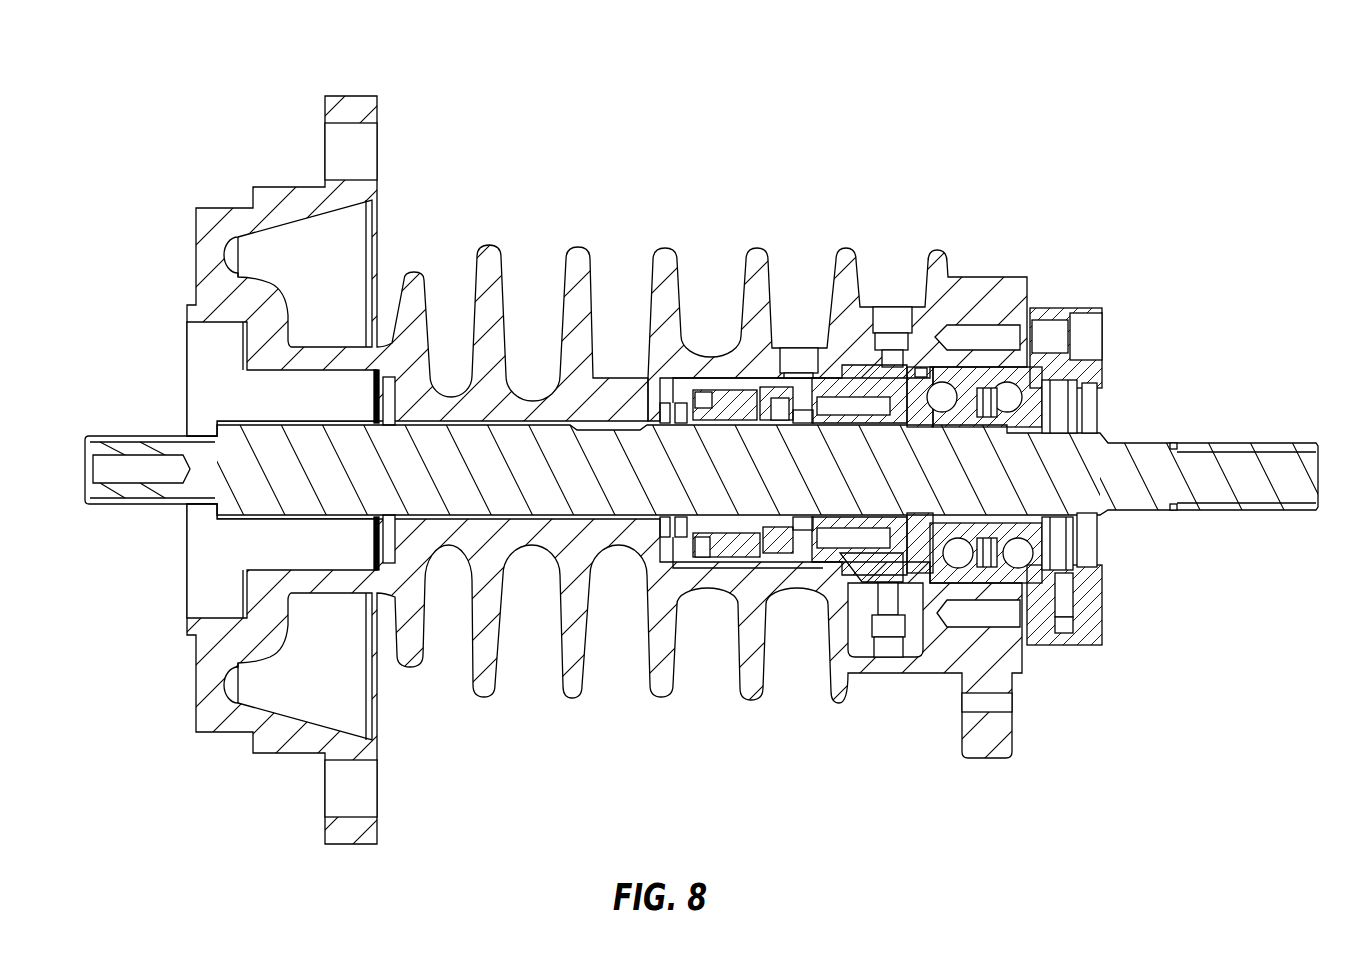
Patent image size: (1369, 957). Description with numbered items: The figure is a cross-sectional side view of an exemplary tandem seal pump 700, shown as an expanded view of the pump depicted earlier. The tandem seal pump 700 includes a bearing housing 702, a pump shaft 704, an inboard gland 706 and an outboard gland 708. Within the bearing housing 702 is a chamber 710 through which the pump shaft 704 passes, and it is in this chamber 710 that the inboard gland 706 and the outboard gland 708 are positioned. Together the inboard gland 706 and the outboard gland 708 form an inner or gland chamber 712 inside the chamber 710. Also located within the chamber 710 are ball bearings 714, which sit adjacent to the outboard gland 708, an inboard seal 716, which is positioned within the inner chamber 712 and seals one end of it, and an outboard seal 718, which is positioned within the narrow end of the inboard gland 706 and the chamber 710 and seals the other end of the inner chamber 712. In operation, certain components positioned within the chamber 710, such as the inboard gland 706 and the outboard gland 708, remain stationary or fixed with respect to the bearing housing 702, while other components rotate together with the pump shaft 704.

The tandem seal pump 700 is at (500, 37).
The bearing housing 702 is at (1018, 297).
The pump shaft 704 is at (1133, 457).
The inboard gland 706 is at (868, 367).
The outboard gland 708 is at (917, 373).
The chamber 710 is at (682, 573).
The inner chamber 712 is at (840, 563).
The ball bearings 714 is at (1012, 373).
The inboard seal 716 is at (888, 545).
The outboard seal 718 is at (717, 555).